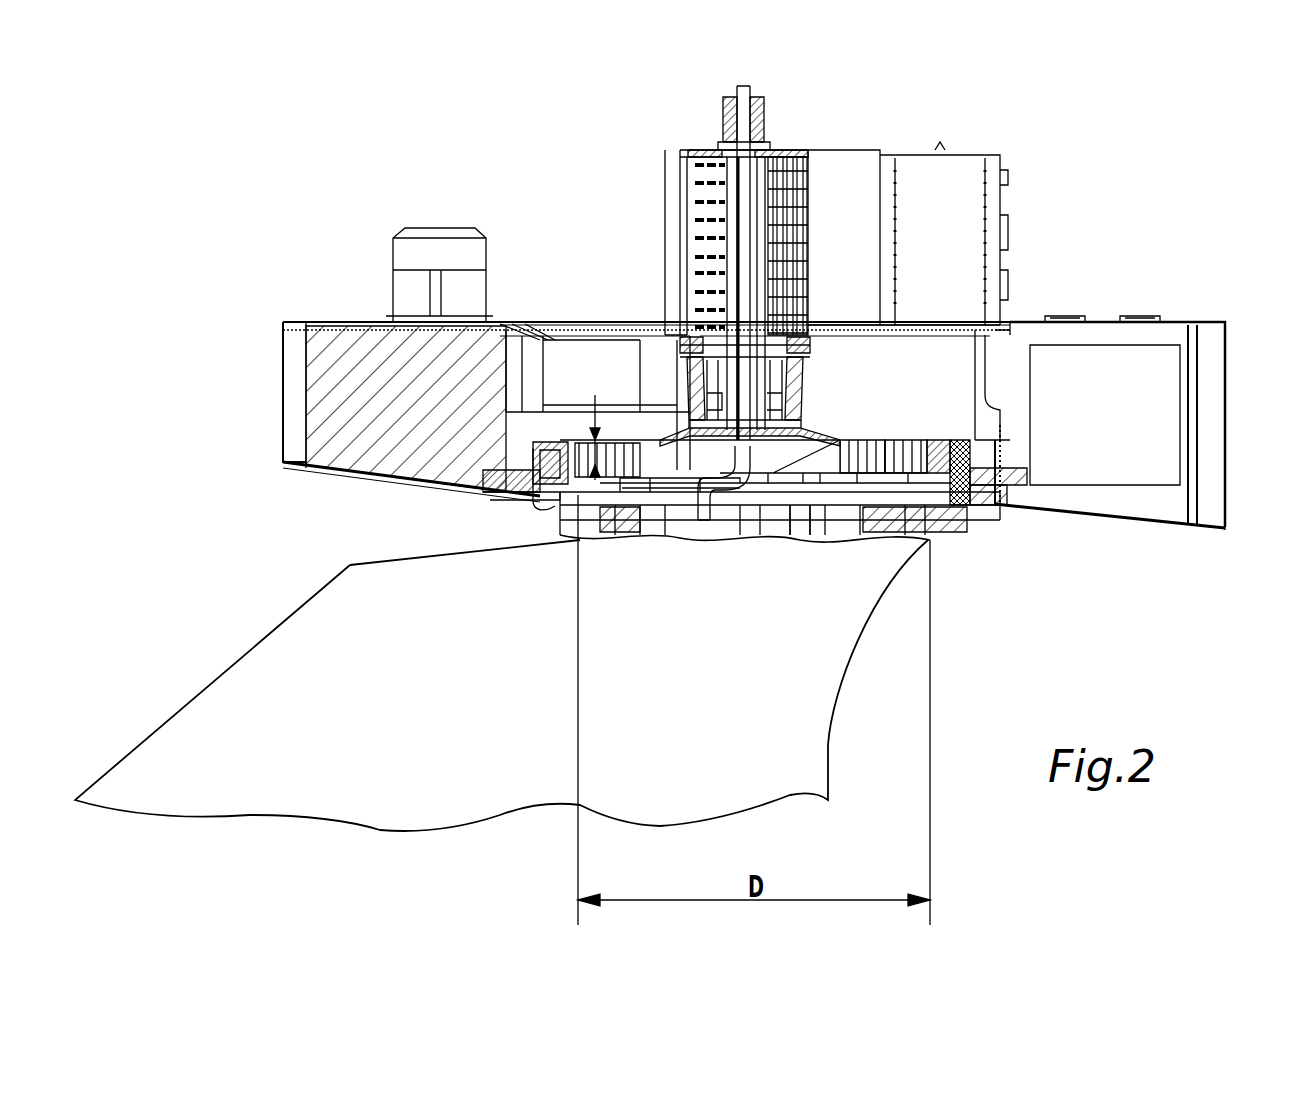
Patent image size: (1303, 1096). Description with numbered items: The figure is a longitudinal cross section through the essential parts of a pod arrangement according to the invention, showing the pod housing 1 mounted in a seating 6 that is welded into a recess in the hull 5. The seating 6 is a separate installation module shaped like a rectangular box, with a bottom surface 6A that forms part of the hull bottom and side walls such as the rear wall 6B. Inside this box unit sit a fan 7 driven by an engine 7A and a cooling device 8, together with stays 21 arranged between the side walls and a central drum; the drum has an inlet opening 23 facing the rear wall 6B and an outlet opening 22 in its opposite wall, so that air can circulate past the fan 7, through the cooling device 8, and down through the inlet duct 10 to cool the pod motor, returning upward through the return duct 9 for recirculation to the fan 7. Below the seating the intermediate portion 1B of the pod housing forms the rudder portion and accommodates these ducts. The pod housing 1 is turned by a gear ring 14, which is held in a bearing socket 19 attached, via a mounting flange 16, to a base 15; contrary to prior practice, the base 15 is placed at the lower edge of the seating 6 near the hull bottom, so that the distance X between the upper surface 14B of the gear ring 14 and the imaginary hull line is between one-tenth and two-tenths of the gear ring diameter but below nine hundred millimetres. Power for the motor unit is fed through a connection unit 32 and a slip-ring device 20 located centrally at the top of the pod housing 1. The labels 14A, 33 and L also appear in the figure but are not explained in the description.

The pod housing 1 is at (192, 661).
The intermediate portion 1B is at (835, 748).
The hull 5 is at (1210, 530).
The seating 6 is at (1133, 418).
The bottom surface 6A is at (1085, 525).
The side wall 6B is at (1200, 408).
The fan 7 is at (624, 334).
The engine 7A is at (435, 250).
The cooling device 8 is at (1114, 425).
The return duct 9 is at (775, 528).
The inlet duct 10 is at (612, 540).
The gear ring 14 is at (960, 520).
The bearing 14A is at (900, 445).
The upper surface 14B is at (872, 445).
The base 15 is at (470, 492).
The mounting flange 16 is at (500, 518).
The bearing socket 19 is at (505, 500).
The slip-ring device 20 is at (662, 166).
The stay 21 is at (325, 385).
The outlet opening 22 is at (512, 350).
The inlet opening 23 is at (985, 383).
The connection unit 32 is at (957, 178).
The chamber 33 is at (558, 412).
The length L is at (800, 522).
The distance X is at (602, 429).